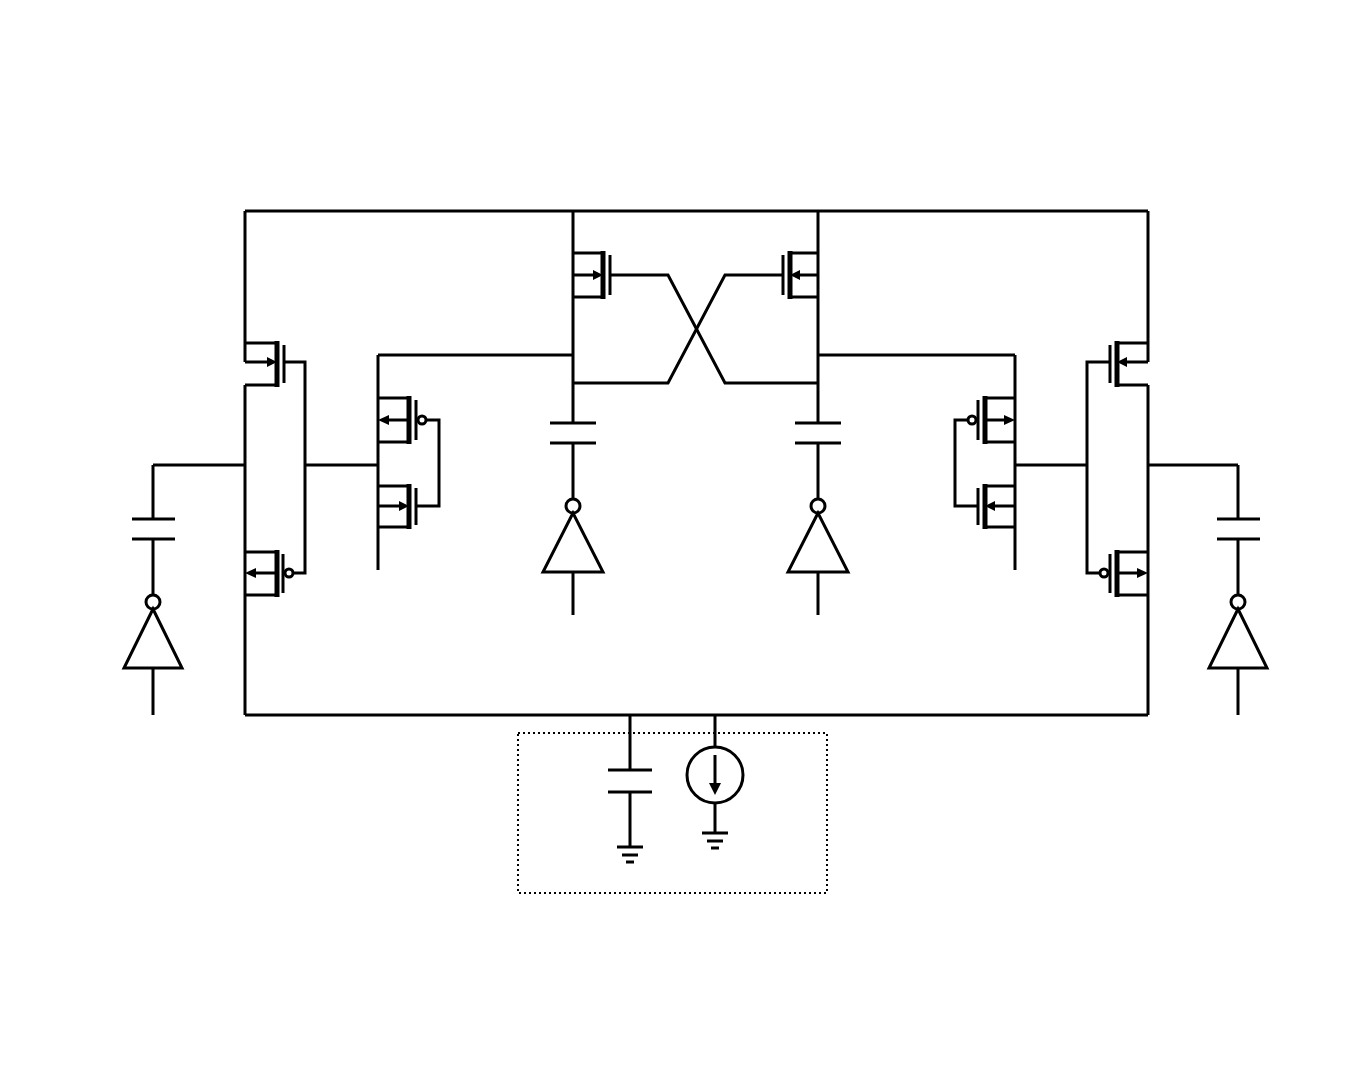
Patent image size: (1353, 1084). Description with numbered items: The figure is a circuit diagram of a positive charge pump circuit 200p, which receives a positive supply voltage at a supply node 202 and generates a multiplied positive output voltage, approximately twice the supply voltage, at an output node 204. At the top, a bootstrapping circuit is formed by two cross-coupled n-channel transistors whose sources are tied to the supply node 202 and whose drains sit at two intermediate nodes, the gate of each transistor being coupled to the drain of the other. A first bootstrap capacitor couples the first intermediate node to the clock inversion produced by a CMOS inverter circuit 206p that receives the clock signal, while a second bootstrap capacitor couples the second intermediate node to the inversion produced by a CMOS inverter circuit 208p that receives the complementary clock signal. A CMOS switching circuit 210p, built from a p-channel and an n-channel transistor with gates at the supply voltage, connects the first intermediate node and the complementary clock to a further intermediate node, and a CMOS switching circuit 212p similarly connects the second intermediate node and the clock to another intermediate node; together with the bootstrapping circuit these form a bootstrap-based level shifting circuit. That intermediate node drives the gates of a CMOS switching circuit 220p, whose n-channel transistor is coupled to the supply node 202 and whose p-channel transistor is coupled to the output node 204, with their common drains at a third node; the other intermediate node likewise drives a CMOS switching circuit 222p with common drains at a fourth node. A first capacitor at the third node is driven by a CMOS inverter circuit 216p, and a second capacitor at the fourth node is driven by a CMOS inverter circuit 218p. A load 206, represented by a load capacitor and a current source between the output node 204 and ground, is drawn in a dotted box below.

The positive charge pump circuit 200p is at (876, 116).
The supply node 202 is at (505, 210).
The output node 204 is at (453, 718).
The load 206 is at (578, 895).
The CMOS inverter circuit 206p is at (553, 548).
The CMOS inverter circuit 208p is at (843, 548).
The CMOS switching circuit 210p is at (418, 544).
The CMOS switching circuit 212p is at (965, 544).
The CMOS inverter circuit 216p is at (141, 637).
The CMOS inverter circuit 218p is at (1274, 637).
The CMOS switching circuit 220p is at (289, 325).
The CMOS switching circuit 222p is at (1106, 325).